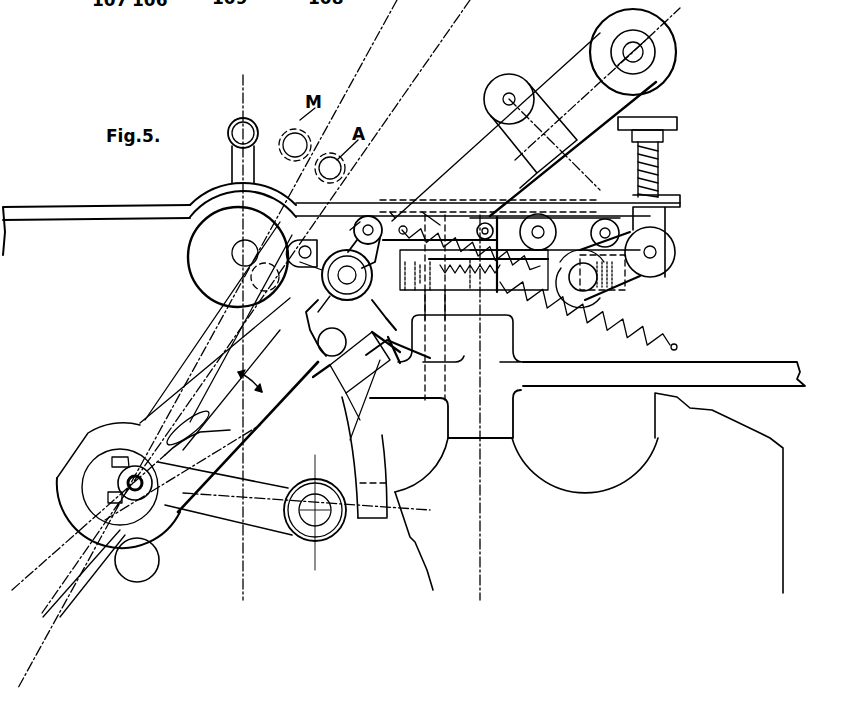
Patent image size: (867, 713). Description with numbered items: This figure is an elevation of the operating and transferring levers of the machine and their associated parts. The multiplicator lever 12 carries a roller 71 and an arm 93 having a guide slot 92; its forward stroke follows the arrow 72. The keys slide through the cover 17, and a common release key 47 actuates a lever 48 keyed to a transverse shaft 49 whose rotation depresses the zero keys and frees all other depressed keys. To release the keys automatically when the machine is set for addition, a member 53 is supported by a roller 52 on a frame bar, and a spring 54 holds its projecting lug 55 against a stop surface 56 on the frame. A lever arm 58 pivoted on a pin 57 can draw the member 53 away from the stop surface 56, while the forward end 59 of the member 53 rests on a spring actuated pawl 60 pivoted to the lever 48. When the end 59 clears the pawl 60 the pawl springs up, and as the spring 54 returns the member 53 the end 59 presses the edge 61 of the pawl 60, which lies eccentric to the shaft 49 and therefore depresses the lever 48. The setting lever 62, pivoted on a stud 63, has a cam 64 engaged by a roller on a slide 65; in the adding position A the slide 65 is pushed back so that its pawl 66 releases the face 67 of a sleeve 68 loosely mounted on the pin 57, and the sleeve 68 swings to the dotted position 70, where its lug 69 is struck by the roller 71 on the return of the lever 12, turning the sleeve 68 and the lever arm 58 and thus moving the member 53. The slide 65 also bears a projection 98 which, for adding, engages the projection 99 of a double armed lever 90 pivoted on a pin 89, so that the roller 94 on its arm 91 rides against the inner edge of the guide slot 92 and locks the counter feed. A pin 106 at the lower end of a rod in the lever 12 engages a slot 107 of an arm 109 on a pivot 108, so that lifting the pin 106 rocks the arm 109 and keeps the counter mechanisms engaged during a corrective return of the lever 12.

The multiplicator lever 12 is at (460, 160).
The cover 17 is at (125, 216).
The release key 47 is at (665, 126).
The lever 48 is at (622, 285).
The shaft 49 is at (582, 282).
The roller 52 is at (583, 212).
The member 53 is at (383, 217).
The spring 54 is at (610, 326).
The projecting pin or lug 55 is at (484, 222).
The stop surface 56 is at (530, 216).
The pin 57 is at (347, 300).
The lever arm 58 is at (362, 217).
The forward end 59 is at (612, 216).
The spring actuated pawl 60 is at (655, 237).
The edge 61 is at (568, 289).
The lever 62 is at (238, 158).
The stud 63 is at (238, 256).
The cam 64 is at (190, 247).
The slide 65 is at (326, 246).
The pawl 66 is at (420, 286).
The face 67 is at (349, 280).
The sleeve 68 is at (372, 302).
The lug 69 is at (262, 325).
The dotted line position 70 is at (326, 338).
The roller 71 is at (327, 372).
The arrow 72 is at (248, 437).
The pin 89 is at (480, 310).
The double armed lever 90 is at (604, 368).
The arm 91 is at (407, 395).
The guide slot 92 is at (355, 440).
The arm 93 is at (383, 519).
The roller 94 is at (347, 402).
The projection 98 is at (425, 290).
The projection 99 is at (438, 297).
The pin 106 is at (134, 478).
The slot 107 is at (117, 453).
The pivot 108 is at (323, 520).
The arm 109 is at (233, 512).